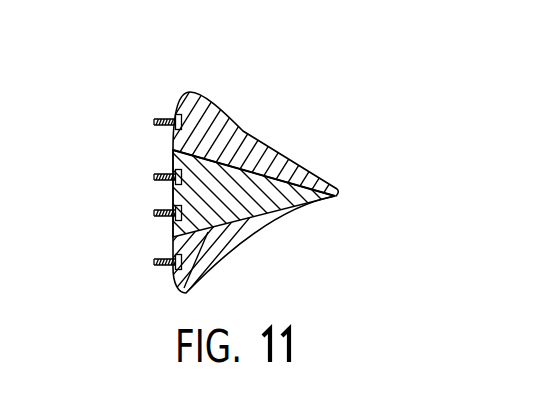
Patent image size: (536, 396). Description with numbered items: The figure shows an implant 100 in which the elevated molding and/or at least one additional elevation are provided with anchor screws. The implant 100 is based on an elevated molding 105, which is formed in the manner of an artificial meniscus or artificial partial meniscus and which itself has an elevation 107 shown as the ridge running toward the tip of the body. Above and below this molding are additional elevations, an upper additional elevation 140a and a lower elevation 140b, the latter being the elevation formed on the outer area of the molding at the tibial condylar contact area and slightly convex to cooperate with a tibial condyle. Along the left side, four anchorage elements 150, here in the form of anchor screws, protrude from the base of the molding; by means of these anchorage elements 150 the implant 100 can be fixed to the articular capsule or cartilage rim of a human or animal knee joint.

The implant 100 is at (355, 136).
The elevated molding 105 is at (250, 193).
The elevation 107 is at (279, 181).
The additional elevation 140a is at (237, 153).
The elevation 140b is at (246, 236).
The anchorage elements 150 is at (152, 262).